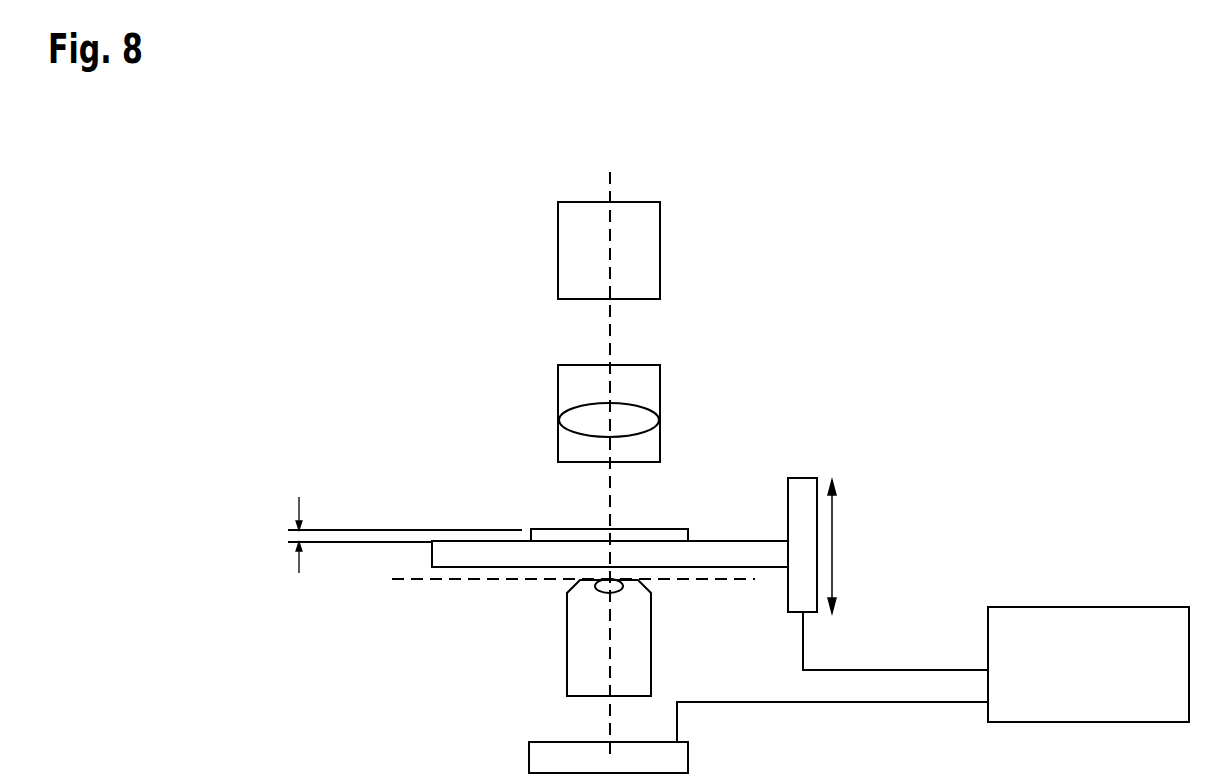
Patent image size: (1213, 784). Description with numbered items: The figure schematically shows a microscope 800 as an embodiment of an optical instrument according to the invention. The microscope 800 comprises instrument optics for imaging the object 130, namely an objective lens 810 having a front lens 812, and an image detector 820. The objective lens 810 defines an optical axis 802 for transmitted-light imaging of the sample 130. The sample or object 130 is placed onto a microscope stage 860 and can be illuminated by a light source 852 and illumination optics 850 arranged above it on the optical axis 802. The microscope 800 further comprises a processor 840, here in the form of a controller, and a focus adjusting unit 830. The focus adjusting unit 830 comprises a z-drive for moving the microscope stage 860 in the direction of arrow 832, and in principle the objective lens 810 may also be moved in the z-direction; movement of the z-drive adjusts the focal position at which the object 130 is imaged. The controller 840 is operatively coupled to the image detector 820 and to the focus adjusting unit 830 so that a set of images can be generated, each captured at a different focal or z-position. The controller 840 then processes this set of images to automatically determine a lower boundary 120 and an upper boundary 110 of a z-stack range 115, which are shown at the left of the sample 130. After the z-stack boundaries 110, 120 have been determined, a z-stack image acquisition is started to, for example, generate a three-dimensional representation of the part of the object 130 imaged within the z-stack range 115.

The microscope 800 is at (997, 265).
The optical axis 802 is at (611, 334).
The light source 852 is at (660, 249).
The illumination optics 850 is at (558, 383).
The microscope stage 860 is at (510, 541).
The object 130 is at (657, 530).
The upper boundary 110 is at (345, 530).
The lower boundary 120 is at (345, 542).
The z-stack range 115 is at (299, 537).
The front lens 812 is at (600, 592).
The objective lens 810 is at (567, 670).
The image detector 820 is at (529, 757).
The focus adjusting unit 830 is at (800, 478).
The arrow 832 is at (832, 538).
The processor 840 is at (1095, 607).